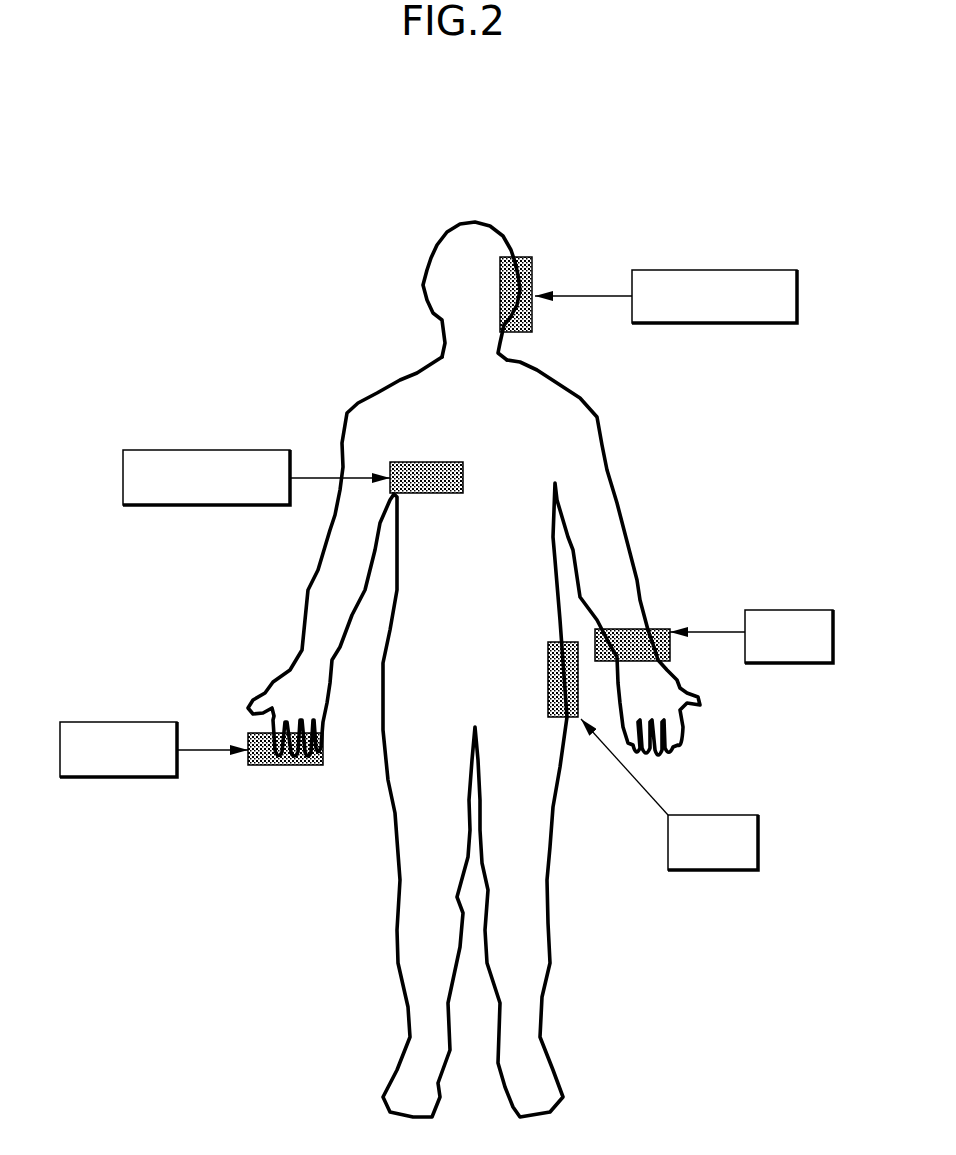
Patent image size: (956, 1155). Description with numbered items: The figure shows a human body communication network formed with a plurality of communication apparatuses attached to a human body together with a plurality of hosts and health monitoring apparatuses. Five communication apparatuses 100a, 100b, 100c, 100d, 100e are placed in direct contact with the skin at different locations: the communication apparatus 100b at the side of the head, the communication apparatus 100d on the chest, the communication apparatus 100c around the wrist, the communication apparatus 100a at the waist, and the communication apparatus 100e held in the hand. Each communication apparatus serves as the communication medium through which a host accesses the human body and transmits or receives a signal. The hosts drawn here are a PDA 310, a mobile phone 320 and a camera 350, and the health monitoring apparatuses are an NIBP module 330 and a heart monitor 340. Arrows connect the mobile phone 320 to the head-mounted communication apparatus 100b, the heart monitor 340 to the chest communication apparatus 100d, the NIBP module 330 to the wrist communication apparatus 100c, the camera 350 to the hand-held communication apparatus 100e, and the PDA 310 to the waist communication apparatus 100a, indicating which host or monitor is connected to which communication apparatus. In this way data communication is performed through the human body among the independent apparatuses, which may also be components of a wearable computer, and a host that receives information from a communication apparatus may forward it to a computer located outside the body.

The communication apparatus 100a is at (566, 719).
The communication apparatus 100b is at (518, 255).
The communication apparatus 100c is at (670, 628).
The communication apparatus 100d is at (418, 462).
The communication apparatus 100e is at (275, 767).
The PDA 310 is at (758, 842).
The mobile phone 320 is at (758, 268).
The NIBP module 330 is at (814, 610).
The heart monitor 340 is at (228, 448).
The digital camera 350 is at (149, 722).